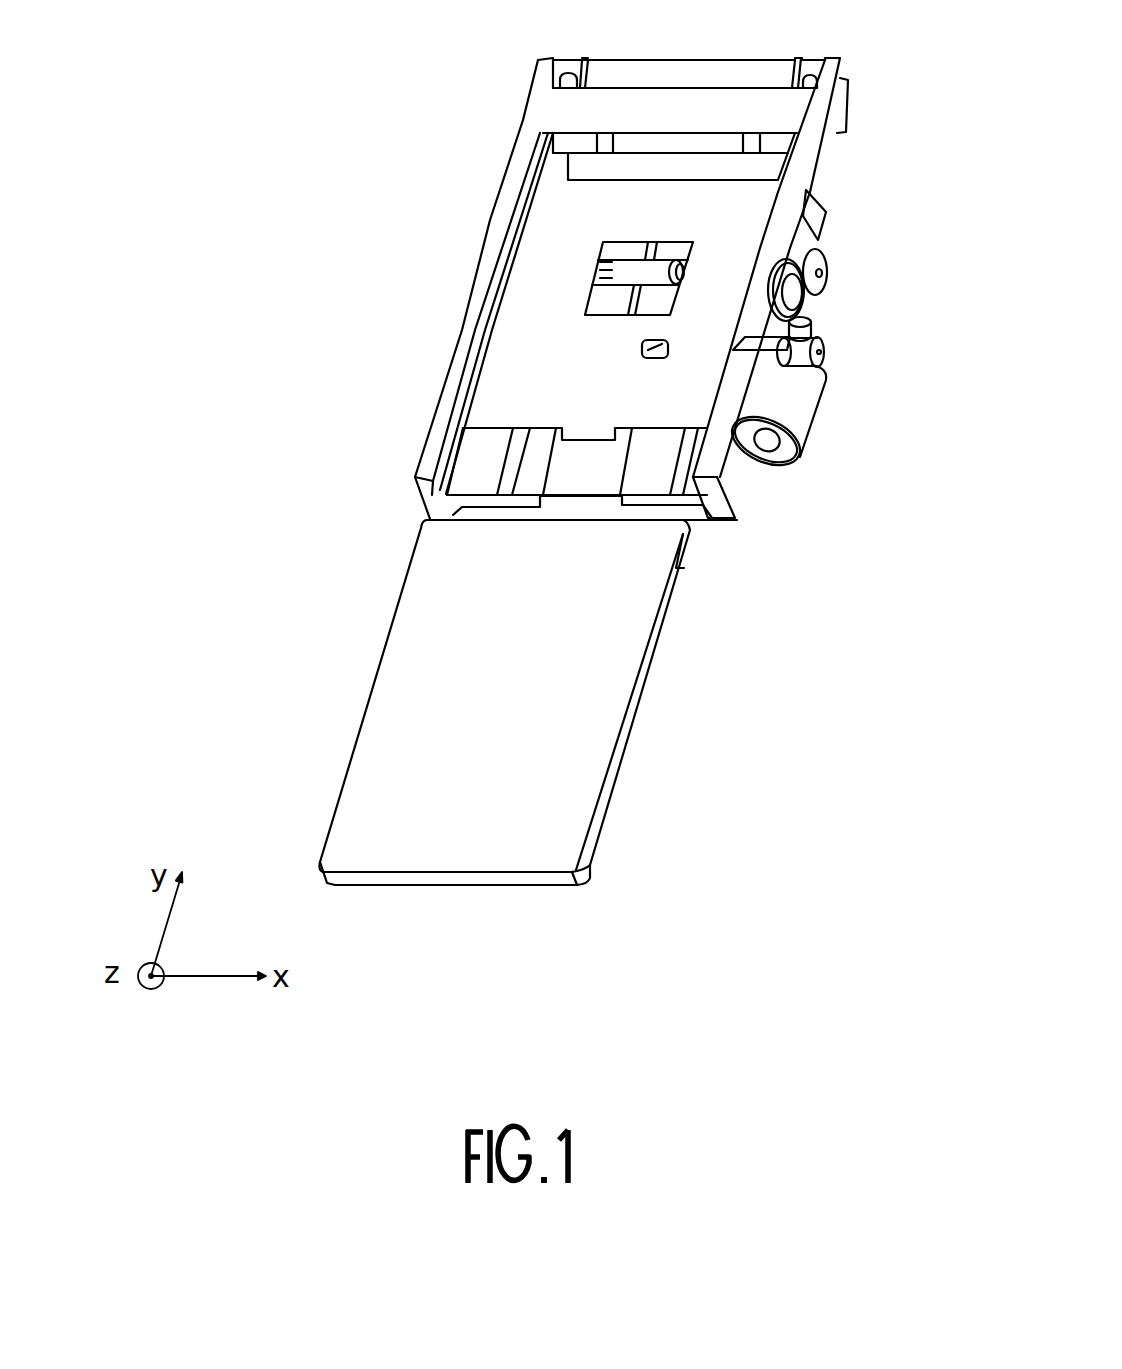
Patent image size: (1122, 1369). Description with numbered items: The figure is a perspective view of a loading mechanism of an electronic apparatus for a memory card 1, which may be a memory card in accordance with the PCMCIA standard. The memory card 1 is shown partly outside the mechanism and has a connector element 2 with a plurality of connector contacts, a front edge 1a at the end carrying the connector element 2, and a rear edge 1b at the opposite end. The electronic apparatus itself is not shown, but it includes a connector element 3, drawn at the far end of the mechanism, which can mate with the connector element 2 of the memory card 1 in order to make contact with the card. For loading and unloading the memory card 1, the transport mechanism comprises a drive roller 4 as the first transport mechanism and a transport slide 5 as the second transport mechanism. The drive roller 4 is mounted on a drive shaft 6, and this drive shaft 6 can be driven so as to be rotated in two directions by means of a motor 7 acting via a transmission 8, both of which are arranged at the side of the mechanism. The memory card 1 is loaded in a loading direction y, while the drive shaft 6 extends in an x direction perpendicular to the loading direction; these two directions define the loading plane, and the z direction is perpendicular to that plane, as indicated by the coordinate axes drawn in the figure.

The memory card 1 is at (593, 757).
The front edge 1a is at (622, 521).
The rear edge 1b is at (470, 885).
The connector element 2 is at (443, 538).
The connector element 3 is at (678, 140).
The drive roller 4 is at (610, 247).
The transport slide 5 is at (563, 493).
The drive shaft 6 is at (603, 273).
The motor 7 is at (812, 403).
The transmission 8 is at (801, 299).